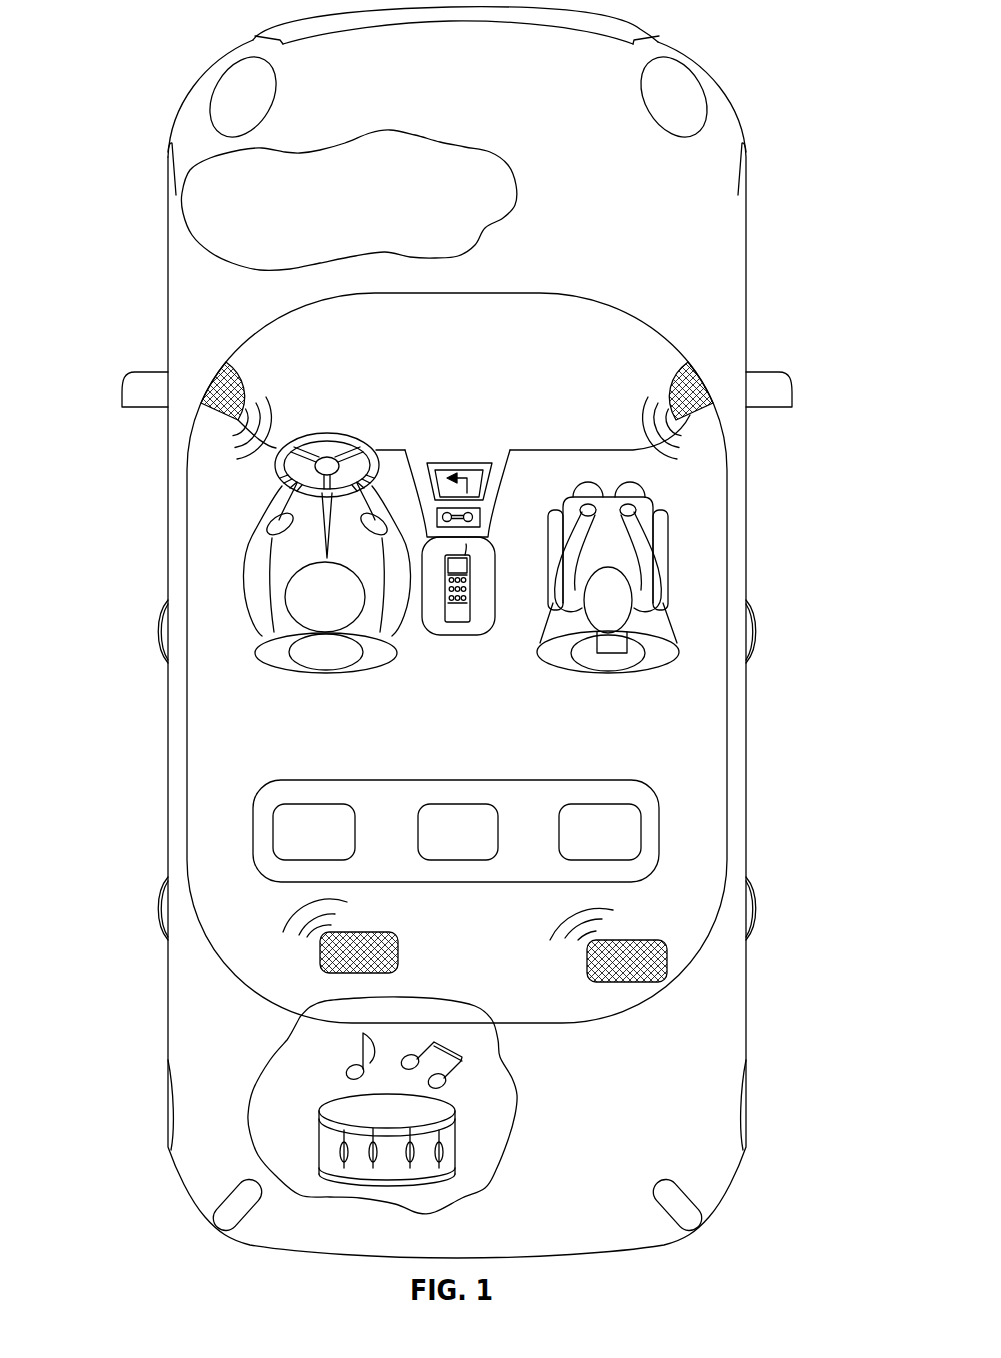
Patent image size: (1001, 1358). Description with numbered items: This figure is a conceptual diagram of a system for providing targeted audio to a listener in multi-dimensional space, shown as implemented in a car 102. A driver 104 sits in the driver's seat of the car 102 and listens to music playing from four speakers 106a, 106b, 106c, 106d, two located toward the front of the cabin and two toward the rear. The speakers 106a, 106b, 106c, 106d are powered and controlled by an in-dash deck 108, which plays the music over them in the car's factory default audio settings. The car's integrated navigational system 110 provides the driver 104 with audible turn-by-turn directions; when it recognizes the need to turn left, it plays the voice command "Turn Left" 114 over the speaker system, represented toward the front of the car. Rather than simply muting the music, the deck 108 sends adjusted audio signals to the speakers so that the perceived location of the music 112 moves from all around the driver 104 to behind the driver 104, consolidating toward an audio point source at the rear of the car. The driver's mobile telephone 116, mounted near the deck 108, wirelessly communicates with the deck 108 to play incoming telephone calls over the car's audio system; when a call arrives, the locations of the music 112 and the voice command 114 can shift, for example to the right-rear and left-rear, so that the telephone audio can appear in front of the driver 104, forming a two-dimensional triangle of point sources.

The car 102 is at (730, 107).
The driver 104 is at (243, 585).
The speaker 106a is at (208, 372).
The speaker 106b is at (710, 372).
The speaker 106c is at (320, 953).
The speaker 106d is at (667, 958).
The in-dash deck 108 is at (480, 517).
The integrated navigational system 110 is at (492, 477).
The music 112 is at (517, 1113).
The voice command "Turn Left" 114 is at (437, 142).
The mobile telephone 116 is at (460, 622).